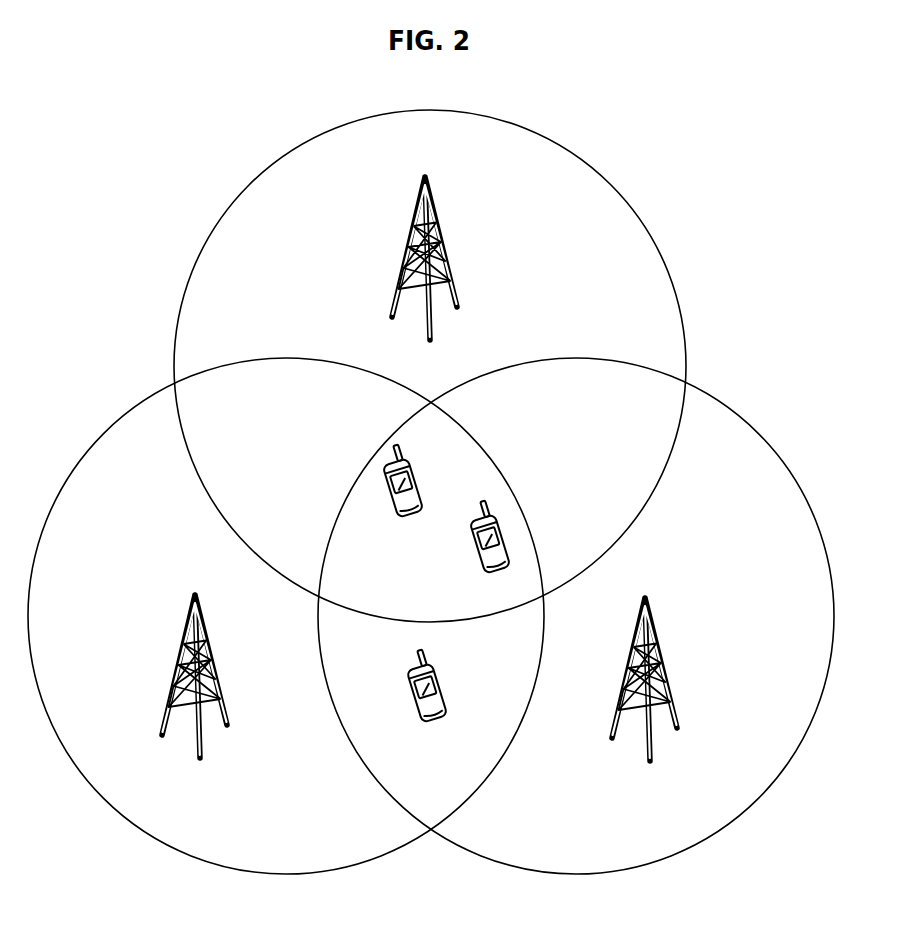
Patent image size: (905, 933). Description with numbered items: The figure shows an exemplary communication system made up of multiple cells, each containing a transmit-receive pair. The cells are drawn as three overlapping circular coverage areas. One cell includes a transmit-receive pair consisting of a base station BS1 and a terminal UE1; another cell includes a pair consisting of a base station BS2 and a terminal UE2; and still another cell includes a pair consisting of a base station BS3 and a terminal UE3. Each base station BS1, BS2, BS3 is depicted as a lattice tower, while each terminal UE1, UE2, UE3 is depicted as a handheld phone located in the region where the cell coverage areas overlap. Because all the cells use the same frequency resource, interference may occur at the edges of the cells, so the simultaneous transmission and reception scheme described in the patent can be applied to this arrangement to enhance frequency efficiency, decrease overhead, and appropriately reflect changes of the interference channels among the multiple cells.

The base station BS1 is at (445, 258).
The base station BS2 is at (217, 676).
The base station BS3 is at (667, 679).
The terminal UE1 is at (405, 496).
The terminal UE2 is at (431, 702).
The terminal UE3 is at (494, 551).